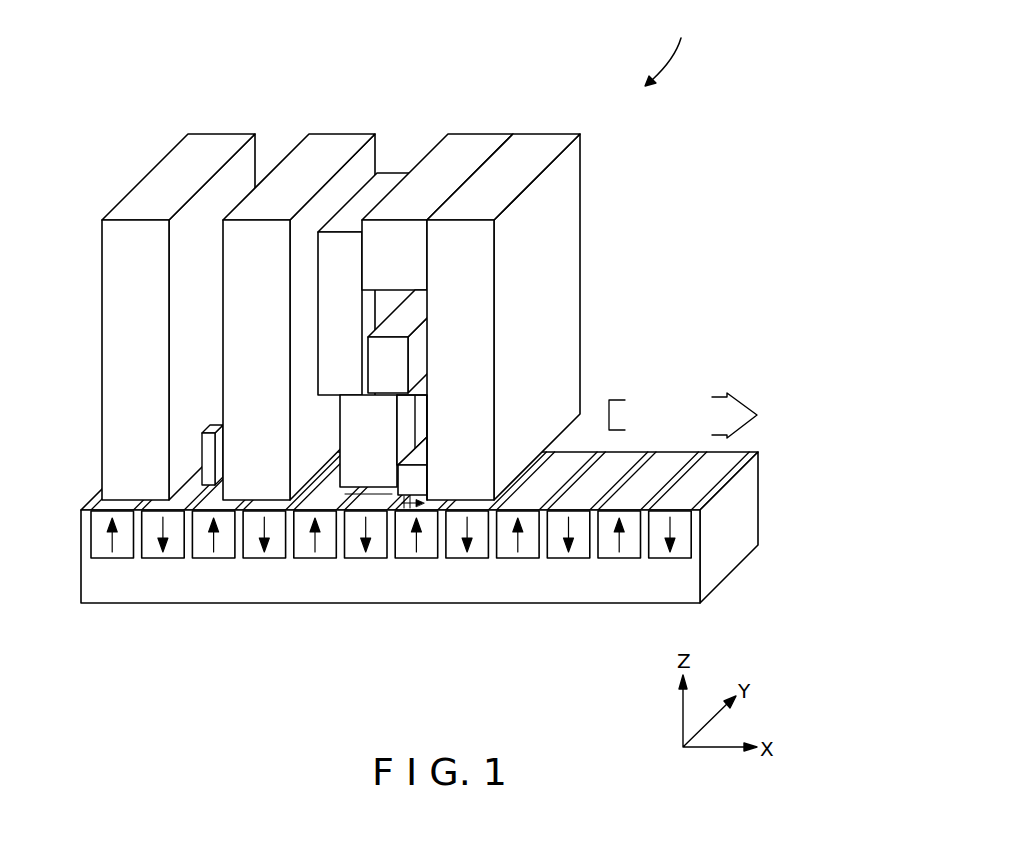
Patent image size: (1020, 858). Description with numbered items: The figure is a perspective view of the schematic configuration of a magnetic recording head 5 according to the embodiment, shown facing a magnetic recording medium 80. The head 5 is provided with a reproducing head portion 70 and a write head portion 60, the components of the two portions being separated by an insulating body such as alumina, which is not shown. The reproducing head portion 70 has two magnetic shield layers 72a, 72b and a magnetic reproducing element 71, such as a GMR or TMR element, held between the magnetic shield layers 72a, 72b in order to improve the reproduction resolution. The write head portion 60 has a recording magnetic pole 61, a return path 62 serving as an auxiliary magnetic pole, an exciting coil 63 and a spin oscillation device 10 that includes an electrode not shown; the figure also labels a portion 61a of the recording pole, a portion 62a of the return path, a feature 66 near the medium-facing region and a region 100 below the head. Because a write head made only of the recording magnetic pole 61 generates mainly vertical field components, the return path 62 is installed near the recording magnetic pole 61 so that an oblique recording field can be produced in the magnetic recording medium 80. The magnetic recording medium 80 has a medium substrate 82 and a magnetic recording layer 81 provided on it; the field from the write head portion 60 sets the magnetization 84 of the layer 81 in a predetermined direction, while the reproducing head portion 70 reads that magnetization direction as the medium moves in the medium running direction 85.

The magnetic recording head 5 is at (666, 49).
The spin oscillation device 10 is at (420, 457).
The write head portion 60 is at (485, 348).
The recording magnetic pole 61 is at (485, 282).
The main pole tip portion 61a is at (405, 424).
The return path 62 is at (540, 288).
The return yoke tip portion 62a is at (430, 407).
The exciting coil 63 is at (397, 372).
The recording magnetic field 66 is at (396, 497).
The reproducing head portion 70 is at (216, 267).
The magnetic reproducing element 71 is at (210, 460).
The magnetic shield layer 72a is at (243, 133).
The magnetic shield layer 72b is at (217, 79).
The magnetic recording medium 80 is at (419, 582).
The magnetic recording layer 81 is at (170, 560).
The medium substrate 82 is at (215, 595).
The magnetization 84 is at (617, 550).
The medium running direction 85 is at (742, 394).
The air bearing surface 100 is at (372, 495).